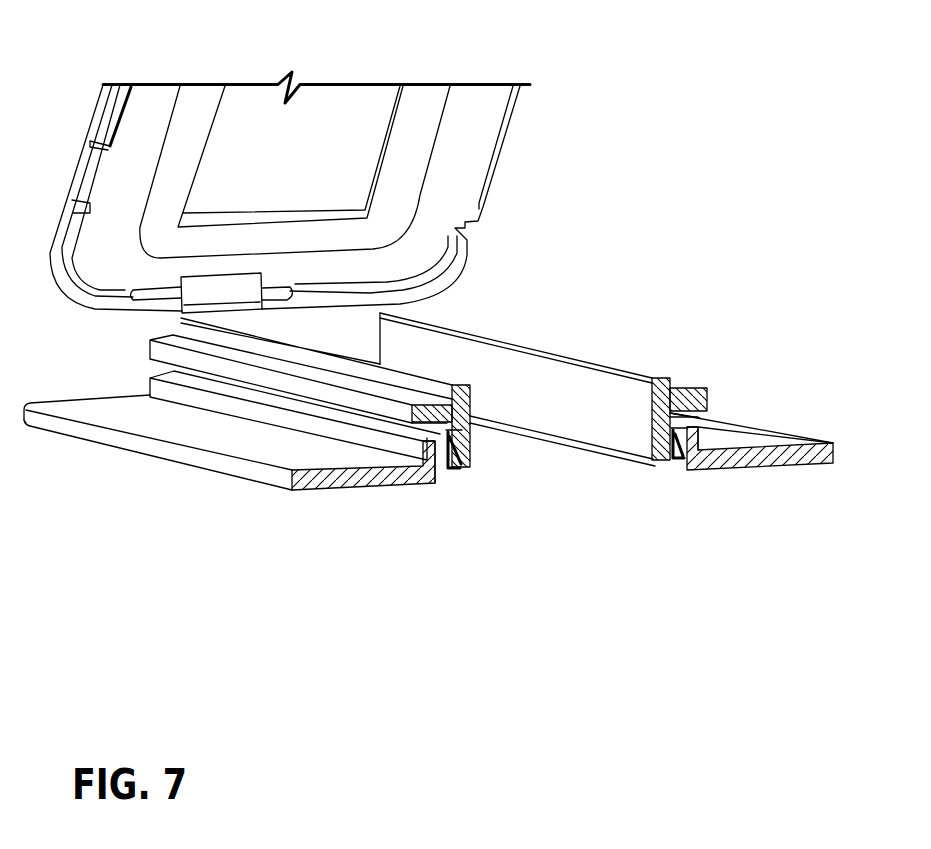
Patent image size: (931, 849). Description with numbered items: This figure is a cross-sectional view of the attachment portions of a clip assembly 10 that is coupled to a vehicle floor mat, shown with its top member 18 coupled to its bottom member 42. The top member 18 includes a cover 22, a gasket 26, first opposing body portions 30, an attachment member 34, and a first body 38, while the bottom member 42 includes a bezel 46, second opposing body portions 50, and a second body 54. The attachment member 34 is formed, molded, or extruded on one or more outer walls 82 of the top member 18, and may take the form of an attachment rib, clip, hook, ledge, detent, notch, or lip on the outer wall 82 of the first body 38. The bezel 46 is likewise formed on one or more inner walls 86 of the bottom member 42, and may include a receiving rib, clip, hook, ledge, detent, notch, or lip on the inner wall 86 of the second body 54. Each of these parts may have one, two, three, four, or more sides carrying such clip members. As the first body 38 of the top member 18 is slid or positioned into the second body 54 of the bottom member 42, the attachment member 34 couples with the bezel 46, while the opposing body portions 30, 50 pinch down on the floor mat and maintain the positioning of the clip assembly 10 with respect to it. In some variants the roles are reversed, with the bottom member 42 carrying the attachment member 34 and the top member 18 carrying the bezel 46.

The clip assembly 10 is at (66, 83).
The top member 18 is at (532, 120).
The cover 22 is at (477, 127).
The gasket 26 is at (420, 115).
The first opposing body portions 30 is at (432, 400).
The attachment member 34 is at (463, 476).
The first body 38 is at (445, 362).
The bottom member 42 is at (320, 499).
The bezel 46 is at (425, 441).
The second opposing body portions 50 is at (215, 433).
The second body 54 is at (436, 471).
The outer wall 82 is at (452, 426).
The inner wall 86 is at (440, 478).